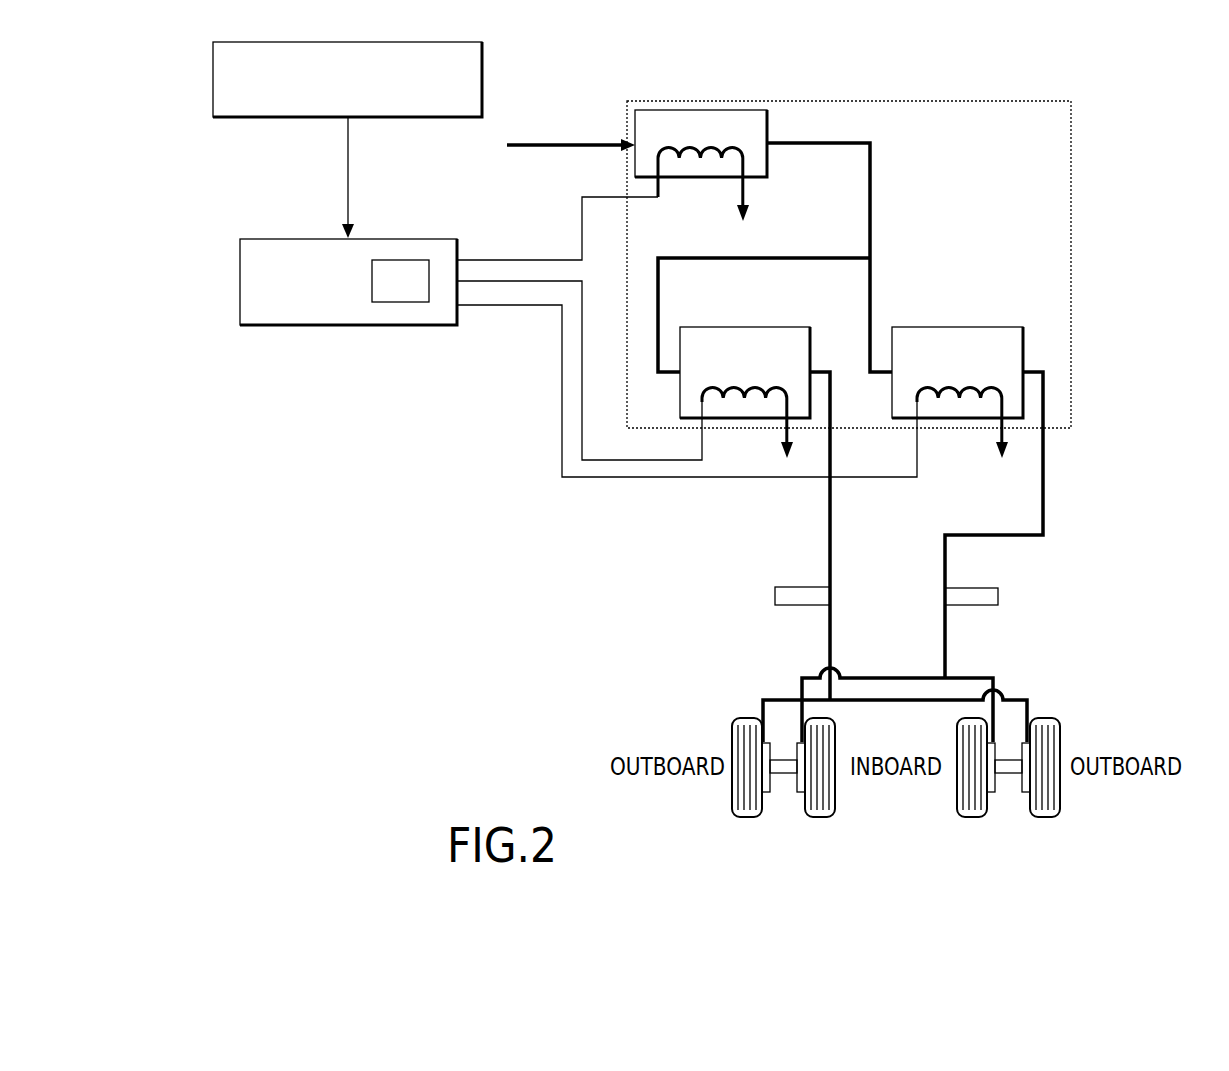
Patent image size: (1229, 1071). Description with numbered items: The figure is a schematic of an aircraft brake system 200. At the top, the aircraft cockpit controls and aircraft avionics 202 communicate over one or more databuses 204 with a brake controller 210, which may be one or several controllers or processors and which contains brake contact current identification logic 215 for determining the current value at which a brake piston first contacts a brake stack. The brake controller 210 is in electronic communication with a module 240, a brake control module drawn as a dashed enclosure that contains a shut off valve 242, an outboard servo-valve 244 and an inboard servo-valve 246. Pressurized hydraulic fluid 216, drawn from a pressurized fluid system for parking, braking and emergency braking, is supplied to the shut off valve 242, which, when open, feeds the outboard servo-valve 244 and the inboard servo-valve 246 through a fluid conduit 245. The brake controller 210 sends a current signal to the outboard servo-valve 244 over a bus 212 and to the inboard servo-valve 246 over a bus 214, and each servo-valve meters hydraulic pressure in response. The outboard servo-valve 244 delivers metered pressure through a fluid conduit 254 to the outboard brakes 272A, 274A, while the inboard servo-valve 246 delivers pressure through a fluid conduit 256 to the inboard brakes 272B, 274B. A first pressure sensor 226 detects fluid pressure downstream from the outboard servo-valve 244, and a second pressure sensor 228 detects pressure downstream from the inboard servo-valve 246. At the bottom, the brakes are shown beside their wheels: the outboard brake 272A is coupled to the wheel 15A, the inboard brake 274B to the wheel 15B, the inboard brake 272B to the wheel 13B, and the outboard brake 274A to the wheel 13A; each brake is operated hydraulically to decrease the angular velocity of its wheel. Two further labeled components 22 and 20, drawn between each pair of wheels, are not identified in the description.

The brake system 200 is at (1134, 77).
The aircraft cockpit controls and aircraft avionics 202 is at (213, 70).
The databus 204 is at (348, 163).
The brake controller 210 is at (240, 303).
The bus 212 is at (662, 462).
The bus 214 is at (740, 478).
The brake contact current identification logic 215 is at (404, 298).
The pressurized hydraulic fluid 216 is at (546, 149).
The first pressure sensor 226 is at (778, 597).
The second pressure sensor 228 is at (992, 595).
The module 240 is at (1071, 205).
The shut off valve 242 is at (767, 122).
The outboard servo-valve 244 is at (790, 327).
The fluid conduit 245 is at (872, 196).
The inboard servo-valve 246 is at (1007, 327).
The fluid conduit 254 is at (833, 518).
The fluid conduit 256 is at (1047, 497).
The wheel 15A is at (732, 794).
The wheel 15B is at (835, 795).
The left axle 22 is at (787, 774).
The outboard brake 272A is at (760, 795).
The inboard brake 274B is at (800, 795).
The wheel 13B is at (958, 790).
The wheel 13A is at (1060, 795).
The right axle 20 is at (1012, 774).
The inboard brake 272B is at (987, 795).
The outboard brake 274A is at (1025, 795).